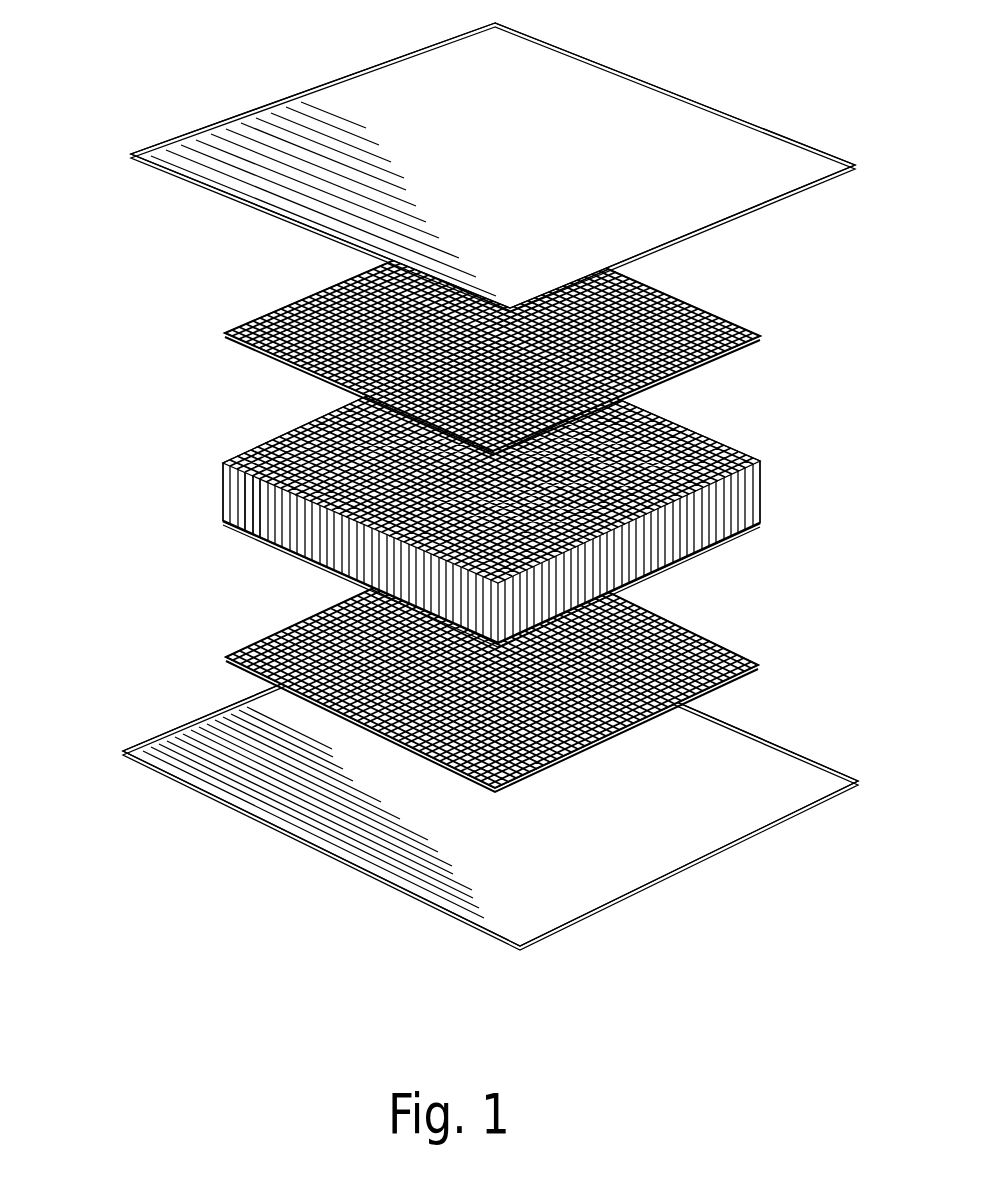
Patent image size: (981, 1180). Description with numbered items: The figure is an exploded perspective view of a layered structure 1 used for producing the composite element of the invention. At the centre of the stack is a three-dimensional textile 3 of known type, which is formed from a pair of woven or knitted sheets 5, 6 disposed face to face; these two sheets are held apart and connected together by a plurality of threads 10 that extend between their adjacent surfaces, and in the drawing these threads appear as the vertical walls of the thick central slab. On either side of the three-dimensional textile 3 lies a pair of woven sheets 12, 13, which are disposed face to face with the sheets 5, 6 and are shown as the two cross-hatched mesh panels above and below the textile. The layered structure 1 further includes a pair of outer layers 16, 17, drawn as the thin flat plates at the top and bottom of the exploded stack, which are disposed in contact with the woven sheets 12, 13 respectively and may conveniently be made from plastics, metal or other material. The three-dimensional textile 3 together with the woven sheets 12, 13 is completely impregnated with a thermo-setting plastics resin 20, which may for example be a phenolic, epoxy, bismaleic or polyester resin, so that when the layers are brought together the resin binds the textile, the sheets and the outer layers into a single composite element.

The layered structure 1 is at (168, 413).
The three-dimensional textile 3 is at (543, 494).
The sheet 5 is at (712, 445).
The sheet 6 is at (710, 540).
The threads 10 is at (732, 497).
The woven sheet 12 is at (723, 313).
The woven sheet 13 is at (715, 637).
The layer 16 is at (737, 150).
The layer 17 is at (752, 765).
The thermo-setting plastics resin 20 is at (250, 503).